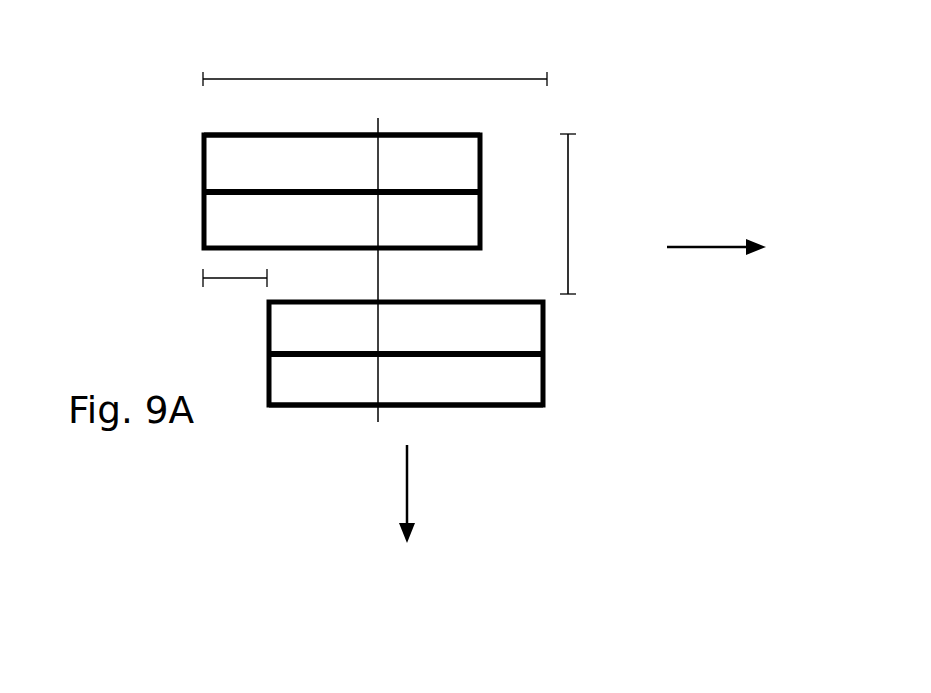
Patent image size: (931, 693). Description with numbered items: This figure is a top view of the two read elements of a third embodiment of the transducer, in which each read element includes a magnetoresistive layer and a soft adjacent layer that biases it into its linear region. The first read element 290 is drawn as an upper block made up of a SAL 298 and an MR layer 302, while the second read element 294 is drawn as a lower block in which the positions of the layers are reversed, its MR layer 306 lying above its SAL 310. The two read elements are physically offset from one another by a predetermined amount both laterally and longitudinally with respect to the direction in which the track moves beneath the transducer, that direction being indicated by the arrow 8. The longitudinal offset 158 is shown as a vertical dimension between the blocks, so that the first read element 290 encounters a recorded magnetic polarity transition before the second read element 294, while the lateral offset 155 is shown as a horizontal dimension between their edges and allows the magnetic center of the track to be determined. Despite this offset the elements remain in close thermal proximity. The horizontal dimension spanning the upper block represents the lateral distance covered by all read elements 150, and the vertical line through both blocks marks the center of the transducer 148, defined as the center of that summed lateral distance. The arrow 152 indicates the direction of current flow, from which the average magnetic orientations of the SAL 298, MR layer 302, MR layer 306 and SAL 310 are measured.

The arrow 8 is at (409, 487).
The center of the transducer 148 is at (375, 414).
The lateral distance covered by all read elements 150 is at (455, 79).
The arrow 152 is at (708, 250).
The lateral offset 155 is at (232, 279).
The longitudinal offset 158 is at (569, 222).
The first read element 290 is at (192, 193).
The second read element 294 is at (556, 354).
The SAL 298 is at (470, 150).
The MR layer 302 is at (280, 226).
The MR layer 306 is at (493, 312).
The SAL 310 is at (505, 386).